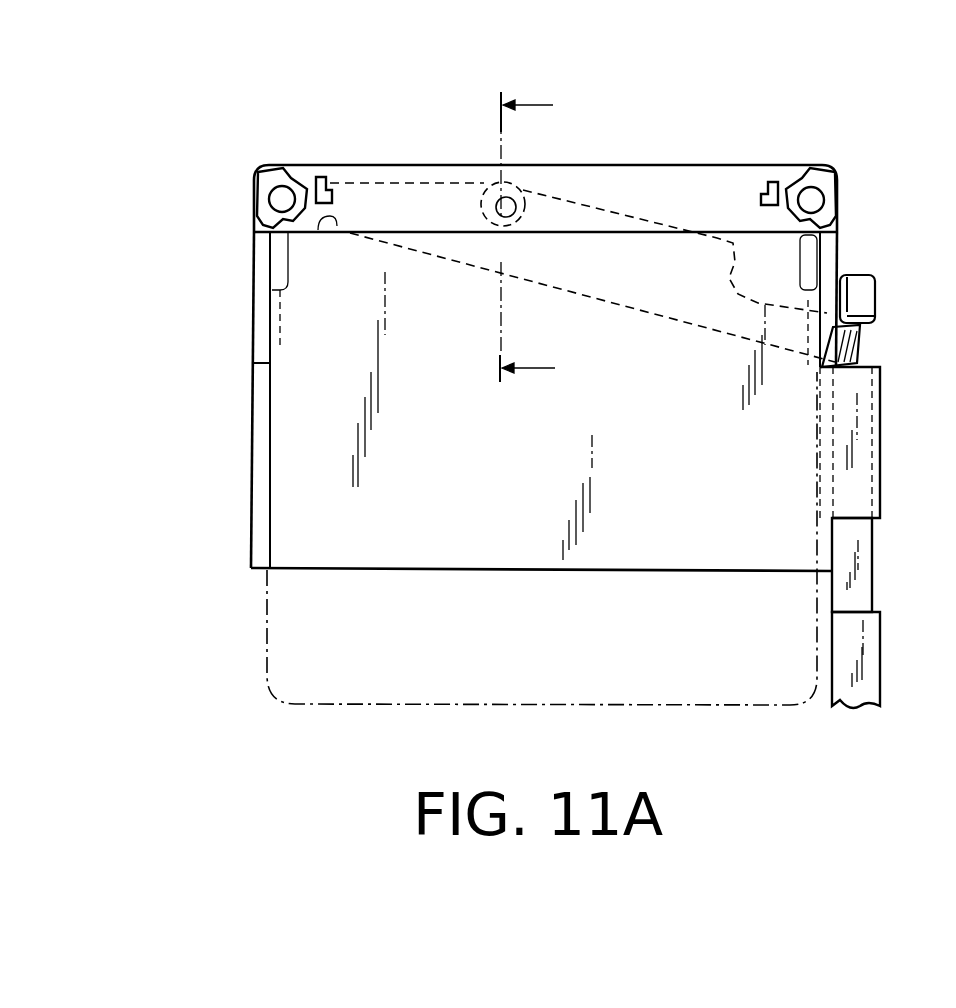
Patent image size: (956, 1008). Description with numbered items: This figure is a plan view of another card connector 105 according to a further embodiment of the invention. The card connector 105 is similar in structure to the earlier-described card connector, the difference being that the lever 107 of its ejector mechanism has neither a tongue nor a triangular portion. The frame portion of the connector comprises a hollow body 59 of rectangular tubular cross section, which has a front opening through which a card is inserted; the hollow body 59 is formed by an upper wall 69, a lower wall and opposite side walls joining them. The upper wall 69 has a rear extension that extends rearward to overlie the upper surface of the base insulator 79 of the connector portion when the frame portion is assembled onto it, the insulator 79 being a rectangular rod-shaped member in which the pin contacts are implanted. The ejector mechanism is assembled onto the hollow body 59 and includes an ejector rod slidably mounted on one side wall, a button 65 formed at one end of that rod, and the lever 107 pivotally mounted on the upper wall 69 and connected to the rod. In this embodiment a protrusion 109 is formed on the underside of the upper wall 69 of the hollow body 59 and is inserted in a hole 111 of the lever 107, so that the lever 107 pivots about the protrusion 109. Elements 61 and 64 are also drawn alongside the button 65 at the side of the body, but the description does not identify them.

The hollow body 59 is at (745, 166).
The hinge member 61 is at (883, 426).
The connector portion 64 is at (873, 561).
The button 65 is at (880, 638).
The upper wall 69 is at (716, 463).
The insulator 79 is at (873, 342).
The card connector 105 is at (621, 127).
The lever 107 is at (307, 232).
The protrusion 109 is at (488, 162).
The hole 111 is at (518, 206).